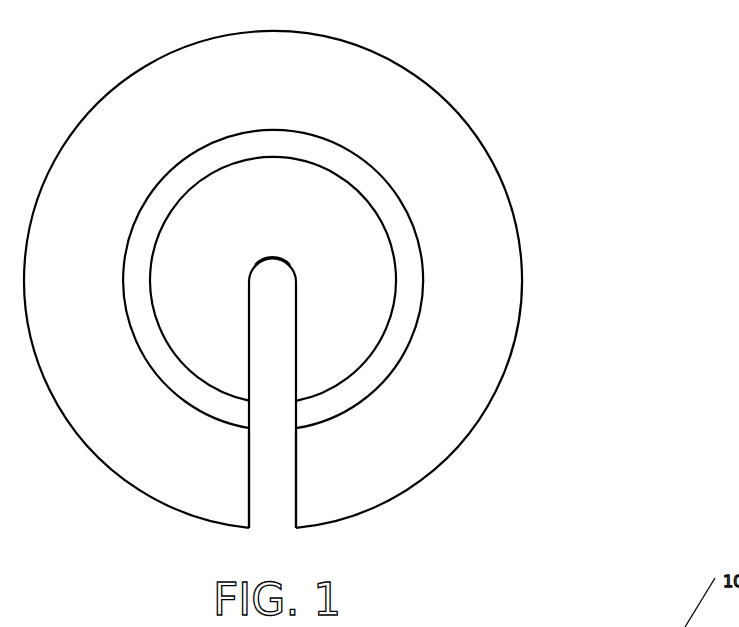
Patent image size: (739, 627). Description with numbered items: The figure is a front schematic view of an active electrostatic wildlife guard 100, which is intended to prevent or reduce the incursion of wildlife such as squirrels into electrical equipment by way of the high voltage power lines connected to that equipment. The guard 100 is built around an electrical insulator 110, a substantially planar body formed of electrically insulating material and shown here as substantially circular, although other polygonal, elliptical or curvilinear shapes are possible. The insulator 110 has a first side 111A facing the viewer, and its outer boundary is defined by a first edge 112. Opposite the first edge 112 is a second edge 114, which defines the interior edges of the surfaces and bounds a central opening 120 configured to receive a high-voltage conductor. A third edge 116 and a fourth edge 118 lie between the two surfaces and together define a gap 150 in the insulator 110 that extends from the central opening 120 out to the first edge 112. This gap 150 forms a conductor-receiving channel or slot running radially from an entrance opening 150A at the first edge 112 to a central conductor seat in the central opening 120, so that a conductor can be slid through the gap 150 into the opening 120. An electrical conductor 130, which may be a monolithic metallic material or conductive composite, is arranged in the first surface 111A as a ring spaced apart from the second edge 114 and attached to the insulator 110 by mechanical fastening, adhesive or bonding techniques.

The active electrostatic wildlife guard 100 is at (534, 100).
The electrical insulator 110 is at (394, 77).
The first side 111A is at (502, 250).
The first edge 112 is at (520, 313).
The electrical conductor 130 is at (290, 147).
The gap 150 is at (265, 353).
The second edge 114 is at (270, 255).
The central opening 120 is at (277, 273).
The third edge 116 is at (250, 445).
The fourth edge 118 is at (296, 445).
The entrance opening 150A is at (272, 529).